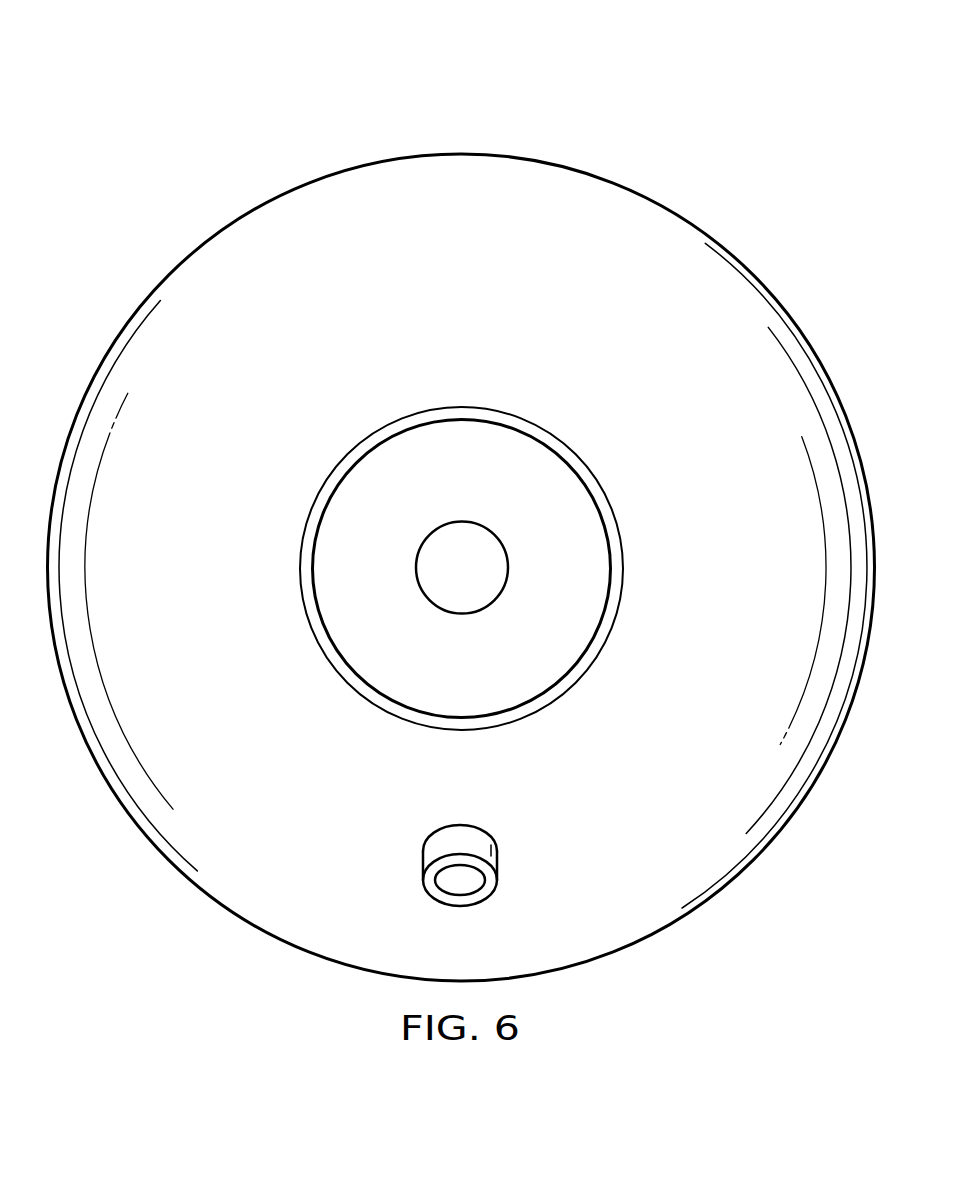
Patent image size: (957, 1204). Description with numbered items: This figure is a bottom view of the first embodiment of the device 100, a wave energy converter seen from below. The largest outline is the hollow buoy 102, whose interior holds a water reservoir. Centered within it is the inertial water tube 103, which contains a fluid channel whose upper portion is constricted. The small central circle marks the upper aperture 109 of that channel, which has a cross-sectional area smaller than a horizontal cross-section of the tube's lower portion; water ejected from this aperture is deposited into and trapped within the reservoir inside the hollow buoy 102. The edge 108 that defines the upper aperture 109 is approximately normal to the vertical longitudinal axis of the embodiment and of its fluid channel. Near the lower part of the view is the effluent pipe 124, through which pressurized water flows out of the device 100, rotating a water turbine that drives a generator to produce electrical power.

The device 100 is at (285, 98).
The hollow buoy 102 is at (532, 157).
The inertial water tube 103 is at (452, 406).
The edge 108 is at (462, 614).
The upper aperture 109 is at (438, 585).
The effluent pipe 124 is at (498, 868).